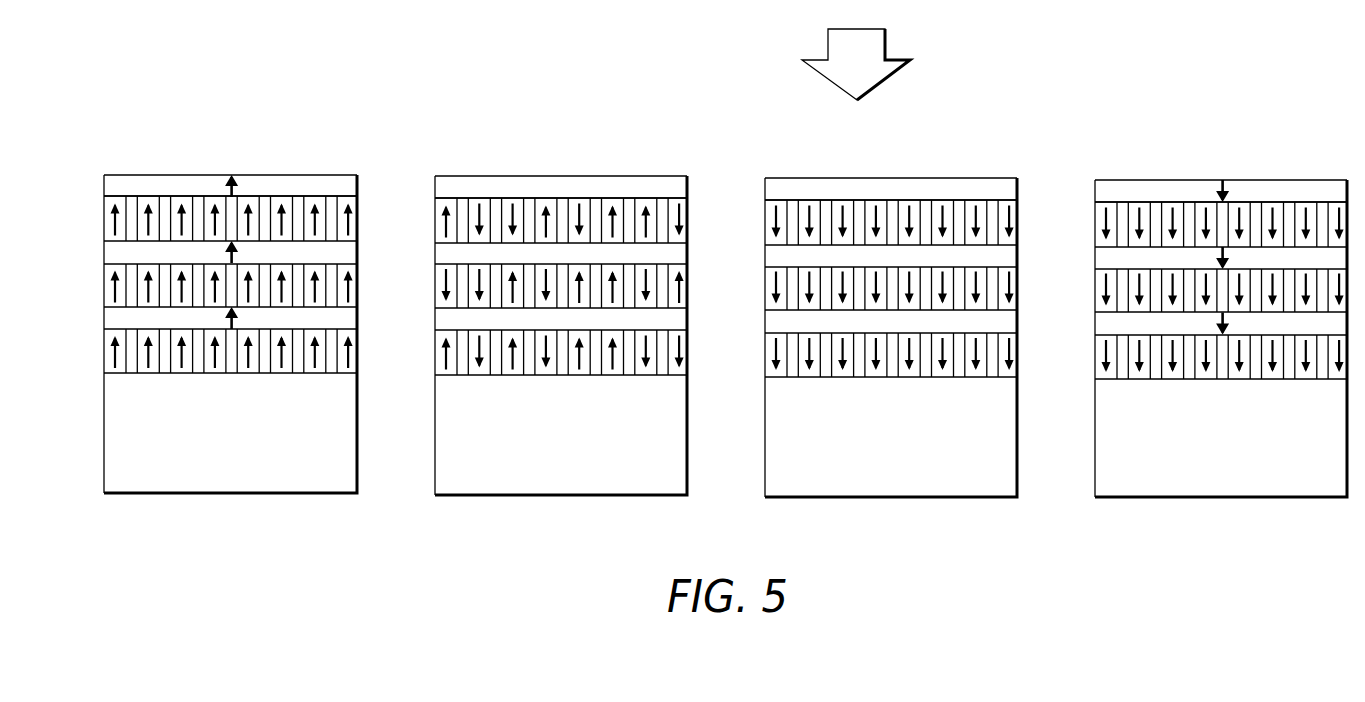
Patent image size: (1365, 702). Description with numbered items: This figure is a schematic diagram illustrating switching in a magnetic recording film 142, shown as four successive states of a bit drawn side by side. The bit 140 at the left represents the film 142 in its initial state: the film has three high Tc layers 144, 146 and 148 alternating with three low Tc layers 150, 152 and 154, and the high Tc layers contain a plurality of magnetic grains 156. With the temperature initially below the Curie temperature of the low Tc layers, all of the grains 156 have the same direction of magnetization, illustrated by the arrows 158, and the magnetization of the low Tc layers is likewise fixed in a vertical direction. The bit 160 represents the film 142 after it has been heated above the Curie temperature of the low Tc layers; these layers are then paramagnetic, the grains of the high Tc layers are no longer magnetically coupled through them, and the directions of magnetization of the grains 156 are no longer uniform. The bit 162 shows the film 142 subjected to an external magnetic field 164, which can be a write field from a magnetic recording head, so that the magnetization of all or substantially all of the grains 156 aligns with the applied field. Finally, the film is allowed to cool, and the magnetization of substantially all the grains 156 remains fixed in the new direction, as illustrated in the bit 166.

The bit 140 is at (230, 276).
The magnetic recording film 142 is at (230, 279).
The high Tc layer 144 is at (195, 378).
The high Tc layer 146 is at (104, 287).
The high Tc layer 148 is at (195, 186).
The low Tc layer 150 is at (104, 320).
The low Tc layer 152 is at (104, 252).
The low Tc layer 154 is at (117, 182).
The magnetic grains 156 is at (182, 357).
The arrows 158 is at (307, 222).
The bit 160 is at (589, 147).
The bit 162 is at (963, 147).
The external magnetic field 164 is at (885, 42).
The bit 166 is at (1251, 149).